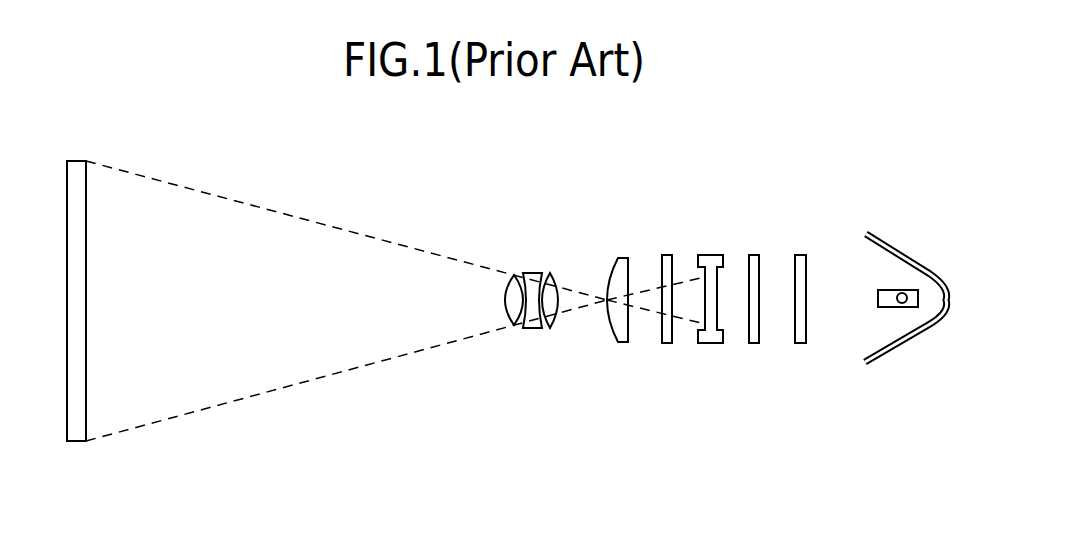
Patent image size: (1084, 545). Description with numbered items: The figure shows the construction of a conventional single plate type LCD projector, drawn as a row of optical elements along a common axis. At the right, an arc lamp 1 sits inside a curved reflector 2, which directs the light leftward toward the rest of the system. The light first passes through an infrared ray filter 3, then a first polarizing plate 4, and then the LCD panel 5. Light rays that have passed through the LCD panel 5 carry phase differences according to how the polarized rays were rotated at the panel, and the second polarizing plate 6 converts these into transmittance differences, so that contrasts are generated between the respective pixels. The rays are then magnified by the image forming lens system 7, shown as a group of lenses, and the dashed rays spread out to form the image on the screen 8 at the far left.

The arc lamp 1 is at (888, 304).
The reflector 2 is at (868, 235).
The infrared ray filter 3 is at (800, 258).
The first polarizing plate 4 is at (755, 341).
The LCD panel 5 is at (712, 258).
The second polarizing plate 6 is at (665, 341).
The image forming lens system 7 is at (505, 254).
The screen 8 is at (75, 168).